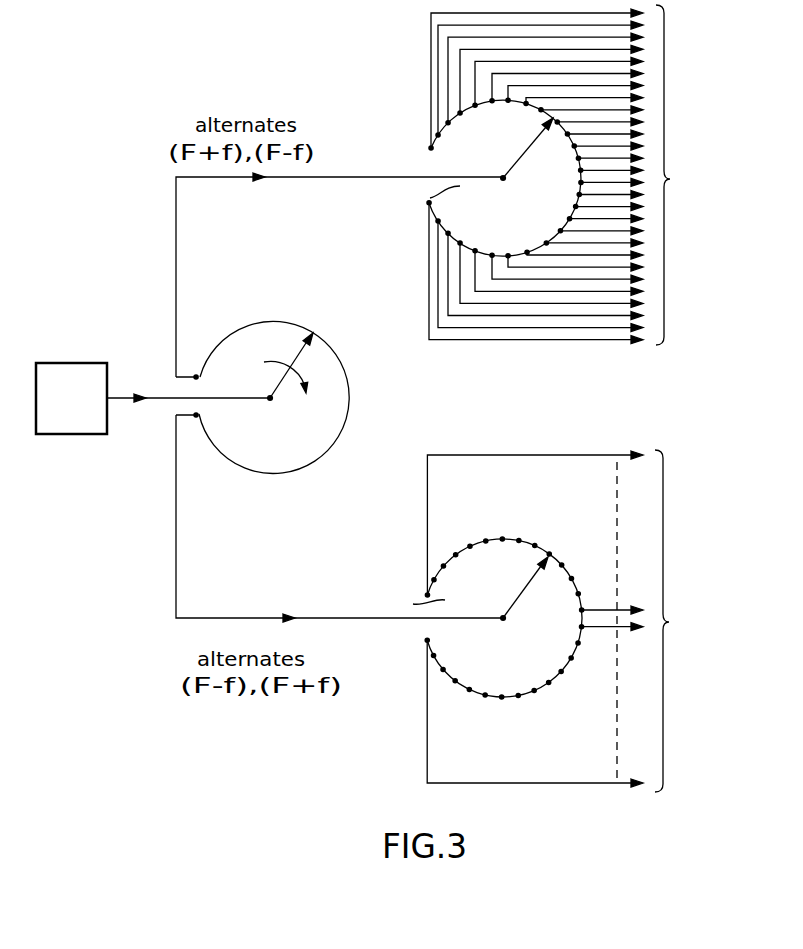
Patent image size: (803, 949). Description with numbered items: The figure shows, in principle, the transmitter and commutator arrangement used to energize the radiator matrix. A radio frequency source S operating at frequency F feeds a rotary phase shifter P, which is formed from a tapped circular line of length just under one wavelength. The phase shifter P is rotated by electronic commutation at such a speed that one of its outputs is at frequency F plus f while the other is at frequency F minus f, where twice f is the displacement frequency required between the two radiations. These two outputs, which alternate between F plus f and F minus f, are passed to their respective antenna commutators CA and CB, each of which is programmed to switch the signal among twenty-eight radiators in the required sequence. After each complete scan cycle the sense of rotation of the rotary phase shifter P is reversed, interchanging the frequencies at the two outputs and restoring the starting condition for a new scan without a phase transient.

The radio frequency source S is at (73, 372).
The frequency F is at (188, 385).
The rotary phase shifter P is at (268, 321).
The antenna commutator CA is at (544, 175).
The antenna commutator CB is at (536, 621).